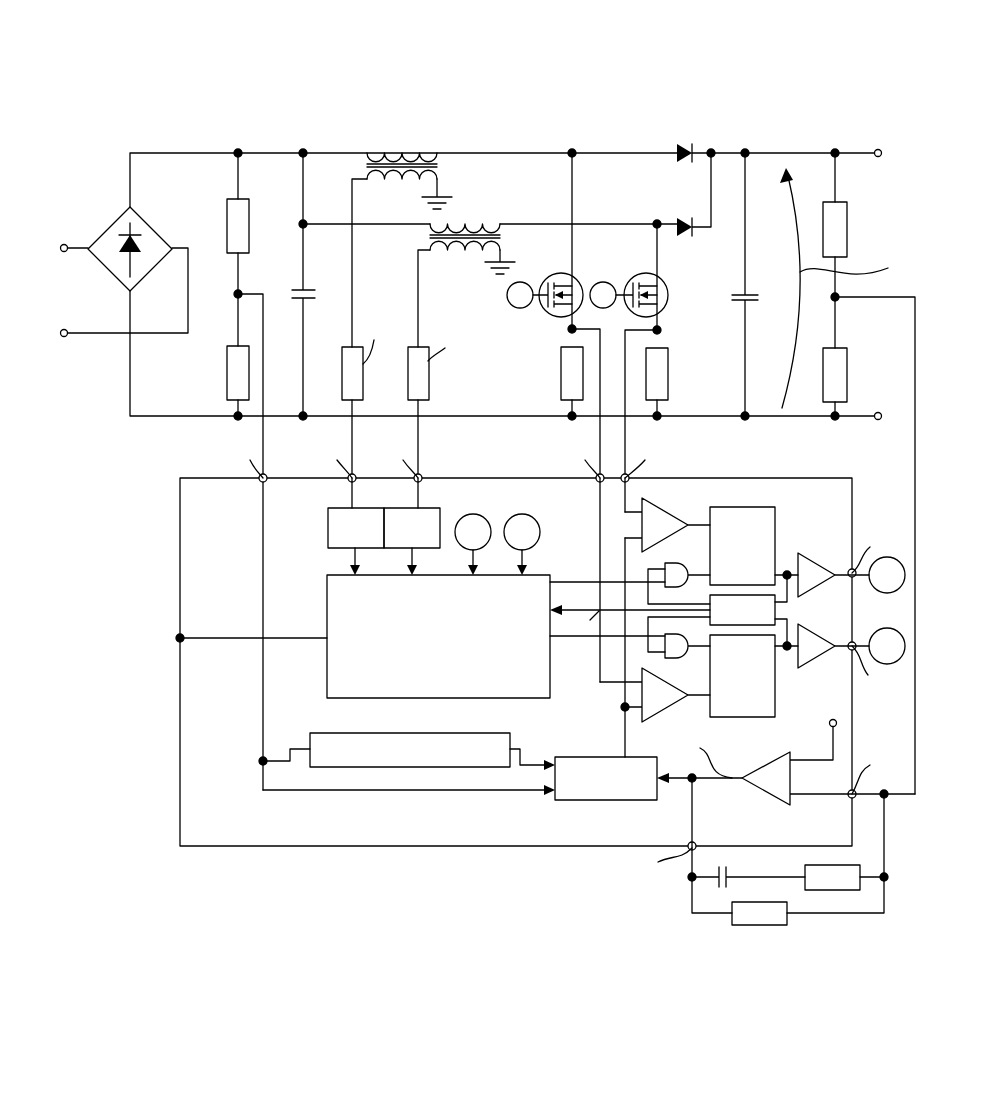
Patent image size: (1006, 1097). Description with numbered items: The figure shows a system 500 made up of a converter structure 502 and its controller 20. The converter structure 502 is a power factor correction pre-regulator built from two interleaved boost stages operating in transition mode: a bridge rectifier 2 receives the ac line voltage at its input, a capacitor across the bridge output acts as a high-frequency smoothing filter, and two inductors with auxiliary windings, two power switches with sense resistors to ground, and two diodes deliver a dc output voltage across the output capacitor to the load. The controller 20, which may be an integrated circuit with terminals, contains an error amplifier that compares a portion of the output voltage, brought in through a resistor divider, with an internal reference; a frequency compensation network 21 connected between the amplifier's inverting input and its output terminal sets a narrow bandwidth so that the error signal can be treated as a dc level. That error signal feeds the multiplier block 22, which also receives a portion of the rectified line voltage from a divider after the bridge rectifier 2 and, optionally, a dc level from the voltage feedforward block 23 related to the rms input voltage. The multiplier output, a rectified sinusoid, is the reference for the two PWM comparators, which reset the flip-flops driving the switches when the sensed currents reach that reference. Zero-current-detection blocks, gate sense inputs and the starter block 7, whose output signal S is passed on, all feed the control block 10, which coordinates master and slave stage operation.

The system 500 is at (789, 90).
The converter structure 502 is at (133, 442).
The bridge rectifier 2 is at (113, 220).
The controller 20 is at (210, 846).
The control block 10 is at (327, 617).
The starter block 7 is at (775, 607).
The multiplier block 22 is at (605, 757).
The voltage feedforward block 23 is at (343, 733).
The frequency compensation network 21 is at (668, 903).